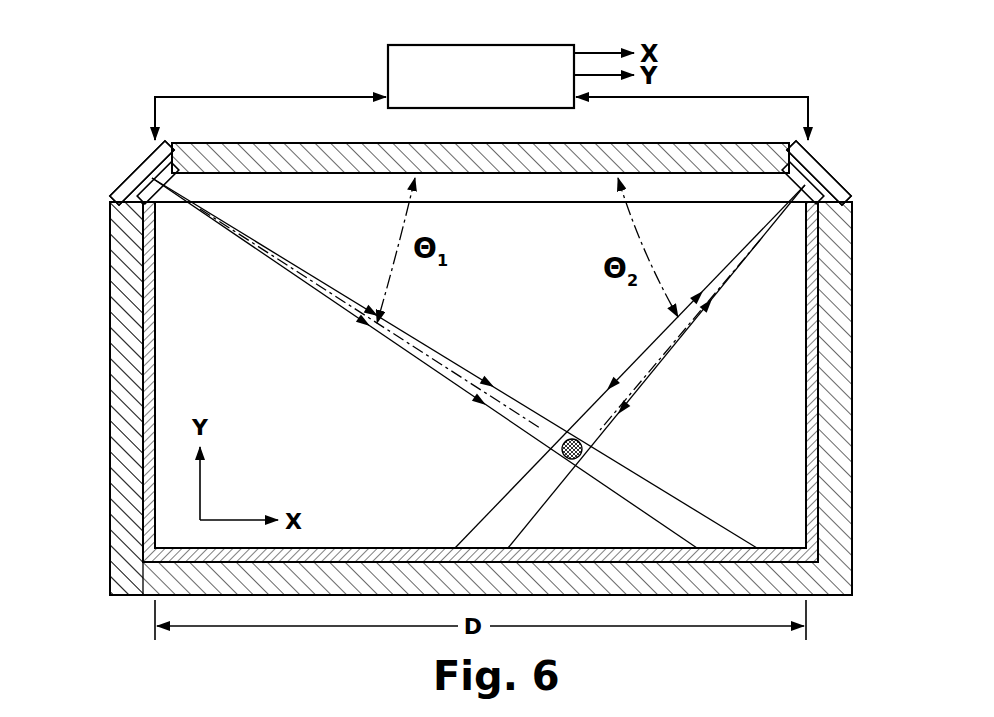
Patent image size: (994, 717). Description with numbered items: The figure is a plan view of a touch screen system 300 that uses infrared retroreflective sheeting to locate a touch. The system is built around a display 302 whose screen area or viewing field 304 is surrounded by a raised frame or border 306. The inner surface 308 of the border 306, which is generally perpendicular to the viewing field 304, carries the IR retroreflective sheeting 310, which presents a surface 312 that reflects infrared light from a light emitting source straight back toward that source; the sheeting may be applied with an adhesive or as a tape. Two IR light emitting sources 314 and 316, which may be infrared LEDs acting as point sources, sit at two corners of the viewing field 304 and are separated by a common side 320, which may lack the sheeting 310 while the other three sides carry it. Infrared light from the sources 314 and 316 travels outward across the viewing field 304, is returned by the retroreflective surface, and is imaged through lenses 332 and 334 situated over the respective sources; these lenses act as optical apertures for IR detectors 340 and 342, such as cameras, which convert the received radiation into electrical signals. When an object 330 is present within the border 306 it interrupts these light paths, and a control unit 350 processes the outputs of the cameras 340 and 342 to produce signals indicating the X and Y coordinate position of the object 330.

The touch screen system 300 is at (294, 72).
The display 302 is at (301, 141).
The viewing field 304 is at (473, 329).
The border 306 is at (108, 360).
The inner surface 308 is at (144, 290).
The IR retroreflective sheeting 310 is at (158, 383).
The surface 312 is at (152, 446).
The first IR light emitting source 314 is at (142, 170).
The second IR light emitting source 316 is at (820, 172).
The common side 320 is at (686, 141).
The object 330 is at (578, 442).
The lens 332 is at (170, 172).
The lens 334 is at (800, 178).
The IR detector 340 is at (123, 174).
The IR detector 342 is at (820, 182).
The control unit 350 is at (396, 44).